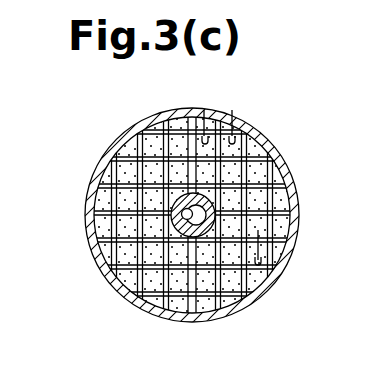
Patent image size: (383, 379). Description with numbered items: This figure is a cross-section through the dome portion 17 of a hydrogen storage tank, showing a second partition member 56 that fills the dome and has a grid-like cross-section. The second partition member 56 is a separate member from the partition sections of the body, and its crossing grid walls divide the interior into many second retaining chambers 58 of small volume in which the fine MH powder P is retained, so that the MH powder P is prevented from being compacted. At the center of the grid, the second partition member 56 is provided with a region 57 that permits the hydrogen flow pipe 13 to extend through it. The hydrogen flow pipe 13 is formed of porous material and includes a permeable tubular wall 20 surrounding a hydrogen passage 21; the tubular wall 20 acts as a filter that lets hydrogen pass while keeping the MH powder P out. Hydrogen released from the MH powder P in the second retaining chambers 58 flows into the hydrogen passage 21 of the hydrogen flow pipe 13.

The hydrogen flow pipe 13 is at (189, 193).
The dome portion 17 is at (268, 139).
The tubular wall 20 is at (190, 237).
The hydrogen passage 21 is at (171, 221).
The second partition member 56 is at (131, 153).
The region 57 is at (214, 199).
The second retaining chamber 58 is at (230, 136).
The MH powder P is at (262, 170).